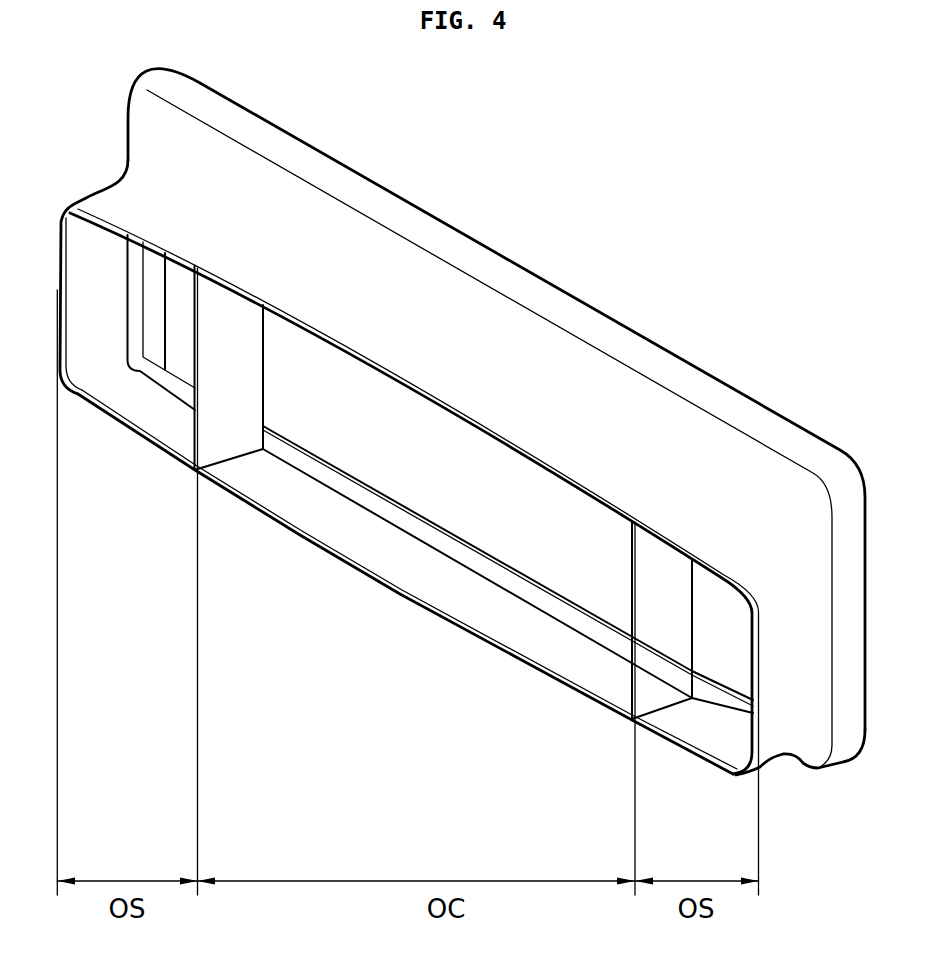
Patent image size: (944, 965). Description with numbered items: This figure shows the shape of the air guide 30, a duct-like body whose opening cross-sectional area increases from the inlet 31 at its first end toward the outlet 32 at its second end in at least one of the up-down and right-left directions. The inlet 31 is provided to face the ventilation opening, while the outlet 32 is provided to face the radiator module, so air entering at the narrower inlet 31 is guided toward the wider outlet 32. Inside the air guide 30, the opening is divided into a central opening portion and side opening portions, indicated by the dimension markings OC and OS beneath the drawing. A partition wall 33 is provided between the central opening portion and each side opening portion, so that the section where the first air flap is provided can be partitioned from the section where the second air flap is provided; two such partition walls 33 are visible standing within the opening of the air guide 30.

The air guide 30 is at (560, 374).
The inlet 31 is at (372, 580).
The outlet 32 is at (333, 158).
The partition wall 33 is at (195, 430).